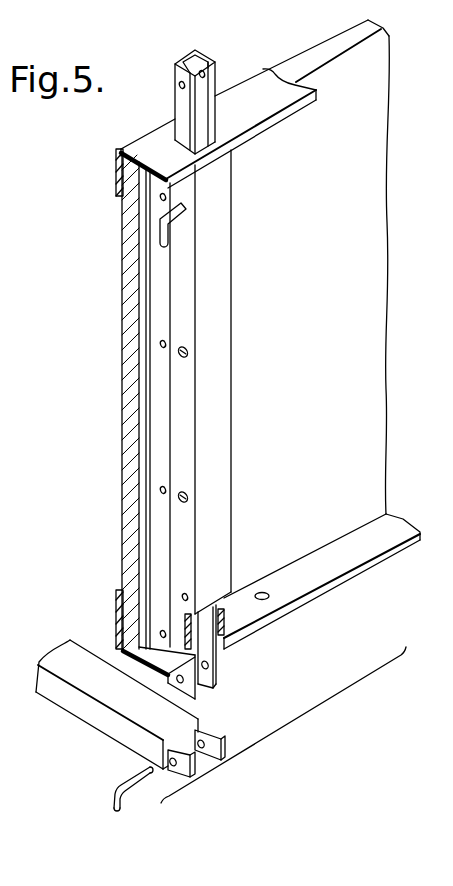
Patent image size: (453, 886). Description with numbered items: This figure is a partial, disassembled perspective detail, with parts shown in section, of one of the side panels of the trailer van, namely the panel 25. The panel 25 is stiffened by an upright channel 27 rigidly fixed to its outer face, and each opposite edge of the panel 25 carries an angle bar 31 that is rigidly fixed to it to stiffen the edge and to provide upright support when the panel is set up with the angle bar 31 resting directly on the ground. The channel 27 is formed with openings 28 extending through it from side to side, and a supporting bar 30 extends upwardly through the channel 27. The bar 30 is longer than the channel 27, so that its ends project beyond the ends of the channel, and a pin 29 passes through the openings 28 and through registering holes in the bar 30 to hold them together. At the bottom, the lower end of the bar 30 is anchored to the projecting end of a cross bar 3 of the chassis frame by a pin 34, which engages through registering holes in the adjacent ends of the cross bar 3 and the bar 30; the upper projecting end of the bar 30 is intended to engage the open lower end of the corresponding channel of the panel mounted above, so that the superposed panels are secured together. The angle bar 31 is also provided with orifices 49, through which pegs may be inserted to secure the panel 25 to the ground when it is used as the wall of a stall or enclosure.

The cross bar 3 is at (48, 690).
The panel 25 is at (378, 291).
The upright channel 27 is at (215, 299).
The opening 28 is at (181, 356).
The pin 29 is at (177, 213).
The supporting bar 30 is at (233, 598).
The angle bar 31 is at (116, 165).
The pin 34 is at (123, 778).
The orifice 49 is at (266, 598).